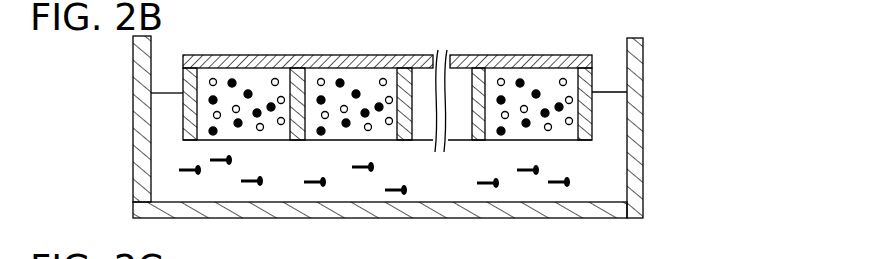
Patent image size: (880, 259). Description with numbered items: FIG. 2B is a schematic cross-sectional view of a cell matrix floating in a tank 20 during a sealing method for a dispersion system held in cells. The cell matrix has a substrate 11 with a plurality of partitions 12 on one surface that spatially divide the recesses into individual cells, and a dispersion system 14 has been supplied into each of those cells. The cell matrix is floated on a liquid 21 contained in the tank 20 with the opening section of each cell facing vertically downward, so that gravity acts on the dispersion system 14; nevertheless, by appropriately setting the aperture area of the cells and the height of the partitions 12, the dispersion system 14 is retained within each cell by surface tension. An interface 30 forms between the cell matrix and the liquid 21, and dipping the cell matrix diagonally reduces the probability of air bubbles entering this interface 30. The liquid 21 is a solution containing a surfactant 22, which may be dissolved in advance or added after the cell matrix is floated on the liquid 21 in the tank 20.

The substrate 11 is at (535, 57).
The partition 12 is at (182, 127).
The dispersion system 14 is at (245, 133).
The tank 20 is at (645, 60).
The liquid 21 is at (615, 172).
The surfactant 22 is at (570, 185).
The interface 30 is at (316, 153).